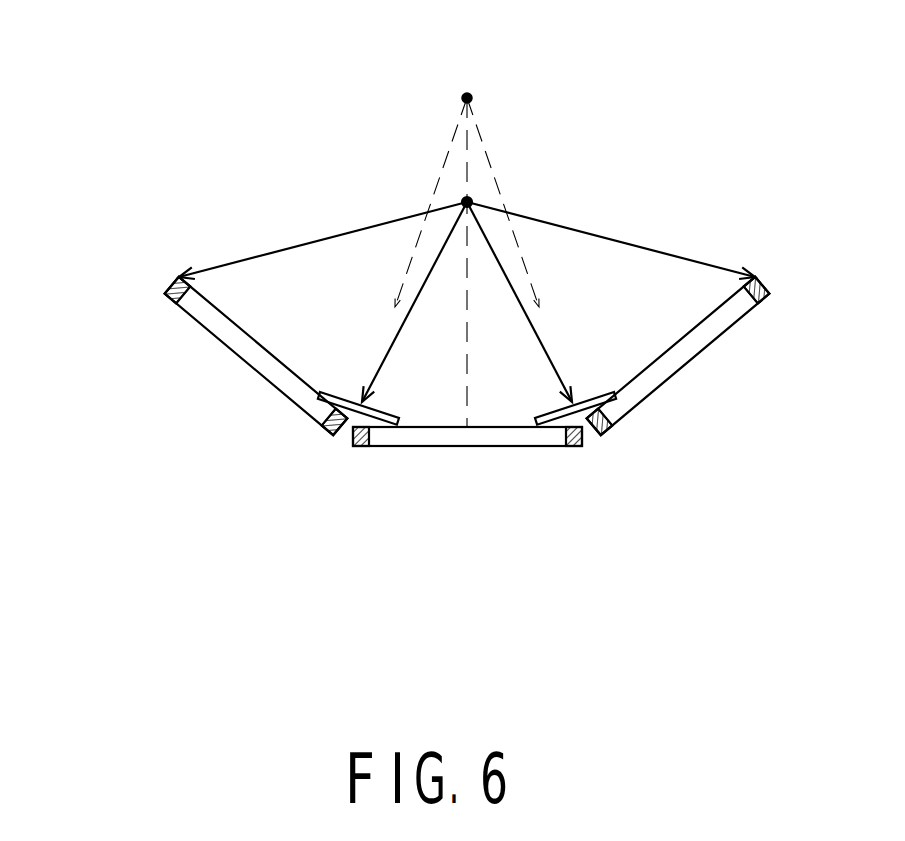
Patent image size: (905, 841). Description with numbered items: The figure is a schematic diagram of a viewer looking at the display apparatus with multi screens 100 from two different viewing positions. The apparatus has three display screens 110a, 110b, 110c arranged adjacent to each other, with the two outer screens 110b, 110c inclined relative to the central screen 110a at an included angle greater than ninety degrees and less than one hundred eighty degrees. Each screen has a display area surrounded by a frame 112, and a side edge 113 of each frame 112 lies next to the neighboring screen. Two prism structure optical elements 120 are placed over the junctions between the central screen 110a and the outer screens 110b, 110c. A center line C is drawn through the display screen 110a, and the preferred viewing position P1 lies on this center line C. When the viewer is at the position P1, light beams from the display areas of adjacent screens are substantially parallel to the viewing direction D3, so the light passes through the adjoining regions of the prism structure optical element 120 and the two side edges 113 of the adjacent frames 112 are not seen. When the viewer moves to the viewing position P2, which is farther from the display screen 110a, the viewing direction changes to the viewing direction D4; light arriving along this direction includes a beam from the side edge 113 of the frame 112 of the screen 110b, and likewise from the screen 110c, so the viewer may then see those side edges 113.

The display apparatus with multi screens 100 is at (160, 71).
The display screen 110a is at (545, 453).
The display screen 110b is at (619, 433).
The display screen 110c is at (315, 433).
The frame 112 is at (467, 361).
The side edge 113 is at (468, 432).
The prism structure optical element 120 is at (335, 391).
The viewing position P1 is at (462, 202).
The viewing position P2 is at (471, 95).
The viewing direction D3 is at (394, 343).
The viewing direction D4 is at (442, 160).
The center line C is at (468, 390).